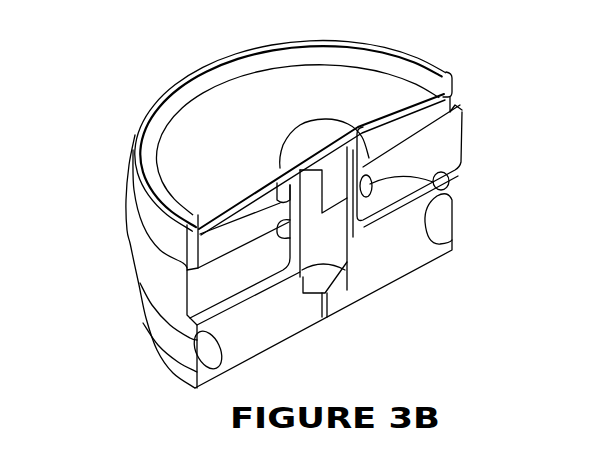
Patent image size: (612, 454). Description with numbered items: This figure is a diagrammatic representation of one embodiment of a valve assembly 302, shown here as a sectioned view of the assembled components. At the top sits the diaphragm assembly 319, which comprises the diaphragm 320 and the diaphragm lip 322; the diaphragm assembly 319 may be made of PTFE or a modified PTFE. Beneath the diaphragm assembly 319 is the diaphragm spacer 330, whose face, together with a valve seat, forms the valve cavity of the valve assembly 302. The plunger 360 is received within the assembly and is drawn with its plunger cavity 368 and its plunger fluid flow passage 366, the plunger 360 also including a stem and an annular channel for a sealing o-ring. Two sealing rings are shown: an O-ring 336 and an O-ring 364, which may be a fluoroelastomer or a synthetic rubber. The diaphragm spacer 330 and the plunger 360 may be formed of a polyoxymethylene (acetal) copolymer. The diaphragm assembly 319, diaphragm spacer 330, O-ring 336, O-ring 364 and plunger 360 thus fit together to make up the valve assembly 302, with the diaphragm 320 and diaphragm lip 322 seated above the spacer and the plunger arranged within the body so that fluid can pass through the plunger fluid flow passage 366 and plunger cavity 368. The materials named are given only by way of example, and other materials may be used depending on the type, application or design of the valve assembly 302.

The valve assembly 302 is at (378, 362).
The diaphragm assembly 319 is at (293, 130).
The diaphragm 320 is at (207, 135).
The diaphragm lip 322 is at (450, 70).
The diaphragm spacer 330 is at (138, 246).
The O-ring 336 is at (443, 182).
The plunger 360 is at (390, 257).
The O-ring 364 is at (437, 218).
The plunger fluid flow passage 366 is at (323, 317).
The plunger cavity 368 is at (345, 252).